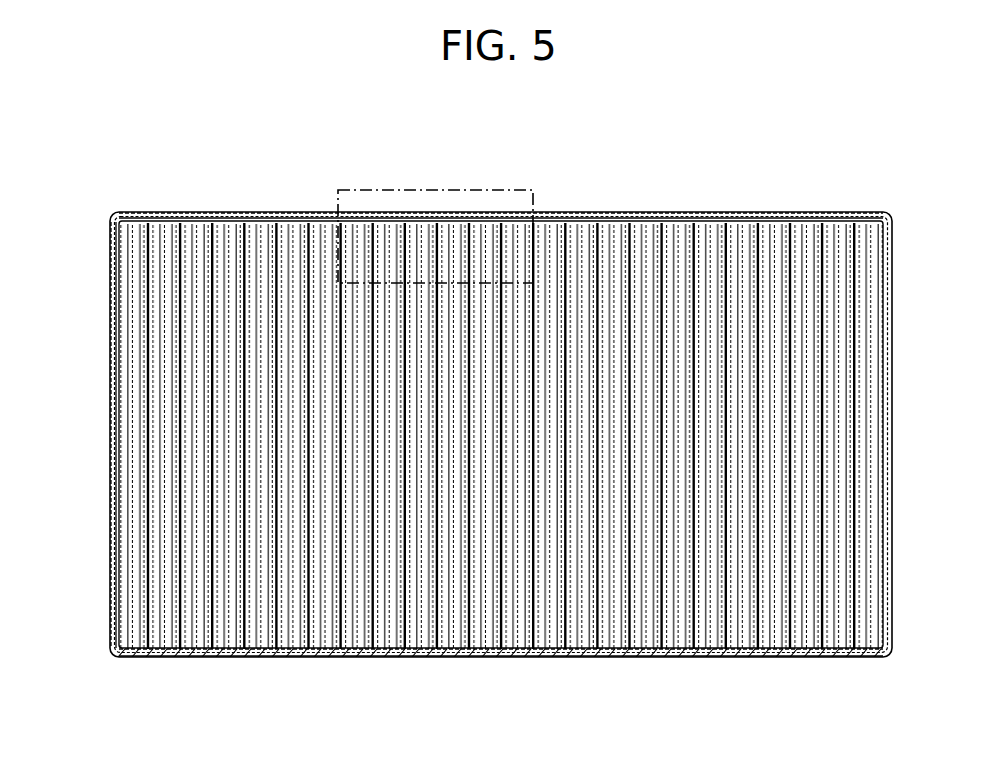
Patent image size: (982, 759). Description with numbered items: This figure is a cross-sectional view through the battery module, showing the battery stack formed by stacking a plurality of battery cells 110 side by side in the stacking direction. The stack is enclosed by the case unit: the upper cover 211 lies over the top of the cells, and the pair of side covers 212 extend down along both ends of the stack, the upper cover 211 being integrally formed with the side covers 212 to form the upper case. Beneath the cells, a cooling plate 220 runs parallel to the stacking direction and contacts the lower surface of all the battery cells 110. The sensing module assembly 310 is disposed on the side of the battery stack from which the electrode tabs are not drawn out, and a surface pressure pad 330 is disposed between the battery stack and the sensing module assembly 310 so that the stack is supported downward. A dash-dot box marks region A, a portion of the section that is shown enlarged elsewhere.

The battery cell 110 is at (128, 378).
The upper cover 211 is at (193, 212).
The side cover 212 is at (110, 535).
The cooling plate 220 is at (491, 656).
The sensing module assembly 310 is at (759, 212).
The surface pressure pad 330 is at (594, 212).
The enlarged region A is at (400, 188).